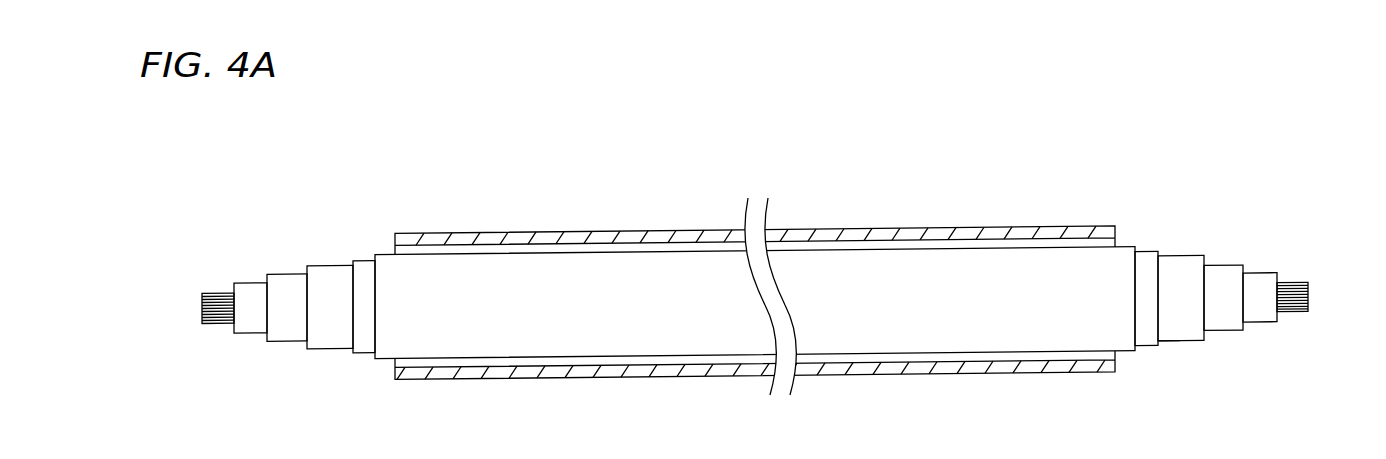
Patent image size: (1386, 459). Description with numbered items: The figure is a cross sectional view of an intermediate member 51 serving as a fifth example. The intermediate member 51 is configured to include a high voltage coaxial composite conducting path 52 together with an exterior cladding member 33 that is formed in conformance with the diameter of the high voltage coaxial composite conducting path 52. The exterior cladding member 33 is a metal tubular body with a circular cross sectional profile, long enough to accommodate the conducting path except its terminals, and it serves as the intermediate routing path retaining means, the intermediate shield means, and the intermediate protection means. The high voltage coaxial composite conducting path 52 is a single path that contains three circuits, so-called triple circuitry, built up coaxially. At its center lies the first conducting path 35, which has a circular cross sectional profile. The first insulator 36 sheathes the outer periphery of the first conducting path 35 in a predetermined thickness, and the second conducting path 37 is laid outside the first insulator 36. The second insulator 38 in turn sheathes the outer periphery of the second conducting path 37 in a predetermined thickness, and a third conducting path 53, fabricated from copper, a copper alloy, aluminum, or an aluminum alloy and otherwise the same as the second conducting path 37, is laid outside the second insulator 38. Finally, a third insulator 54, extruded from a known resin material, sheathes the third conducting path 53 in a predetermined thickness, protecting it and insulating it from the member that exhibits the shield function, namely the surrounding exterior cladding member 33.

The intermediate member 51 is at (345, 186).
The third insulator 54 is at (1098, 270).
The exterior cladding member 33 is at (658, 237).
The third conducting path 53 is at (1147, 260).
The second insulator 38 is at (1178, 262).
The high voltage coaxial composite conducting path 52 is at (1175, 341).
The second conducting path 37 is at (1228, 275).
The first insulator 36 is at (1265, 278).
The first conducting path 35 is at (1298, 282).